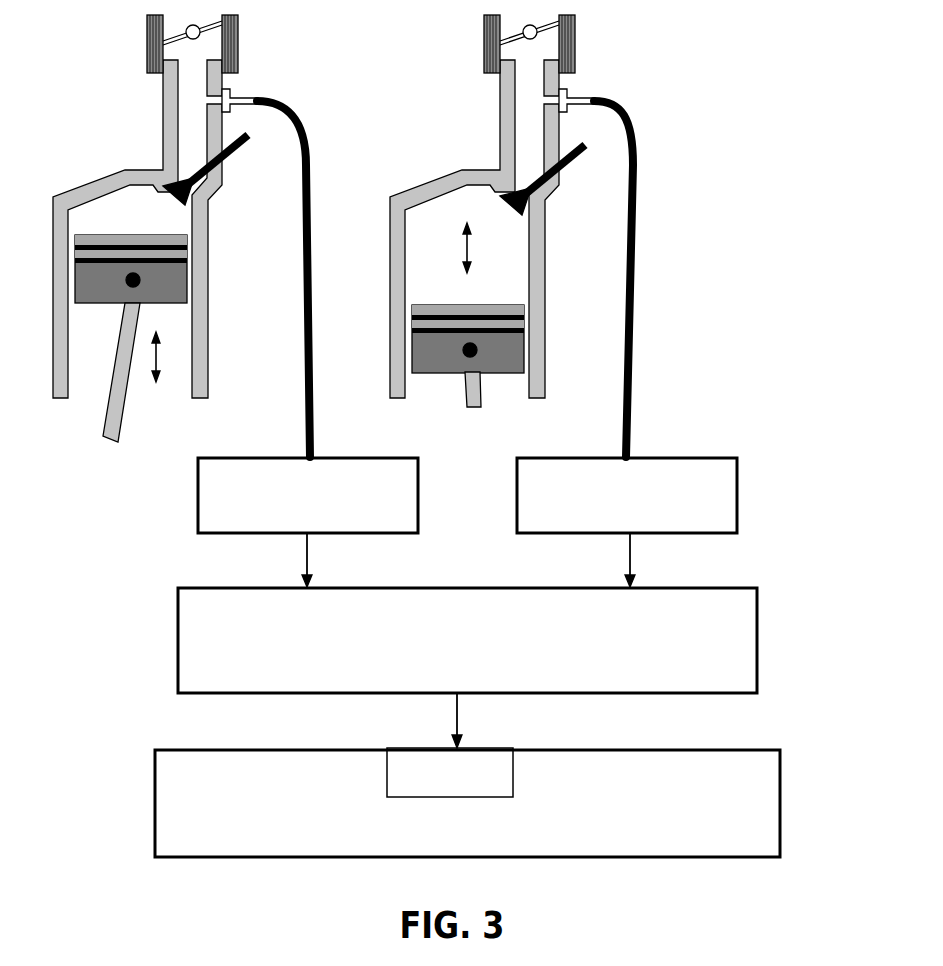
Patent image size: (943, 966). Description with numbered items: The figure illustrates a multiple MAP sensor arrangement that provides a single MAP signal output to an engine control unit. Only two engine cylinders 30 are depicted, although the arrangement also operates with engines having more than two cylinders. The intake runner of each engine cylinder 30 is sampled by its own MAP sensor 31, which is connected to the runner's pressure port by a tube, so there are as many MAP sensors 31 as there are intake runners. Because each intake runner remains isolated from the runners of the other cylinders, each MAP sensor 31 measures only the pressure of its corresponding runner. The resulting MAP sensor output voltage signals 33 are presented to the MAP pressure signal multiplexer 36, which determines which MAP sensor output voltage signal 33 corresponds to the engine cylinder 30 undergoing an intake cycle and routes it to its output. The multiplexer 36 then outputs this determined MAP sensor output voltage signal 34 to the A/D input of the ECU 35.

The engine cylinder 30 is at (378, 228).
The MAP sensor 31 is at (515, 508).
The MAP sensor output voltage signal 33 is at (300, 557).
The determined MAP sensor output voltage signal 34 is at (448, 720).
The ECU 35 is at (782, 782).
The MAP pressure signal multiplexer 36 is at (757, 647).